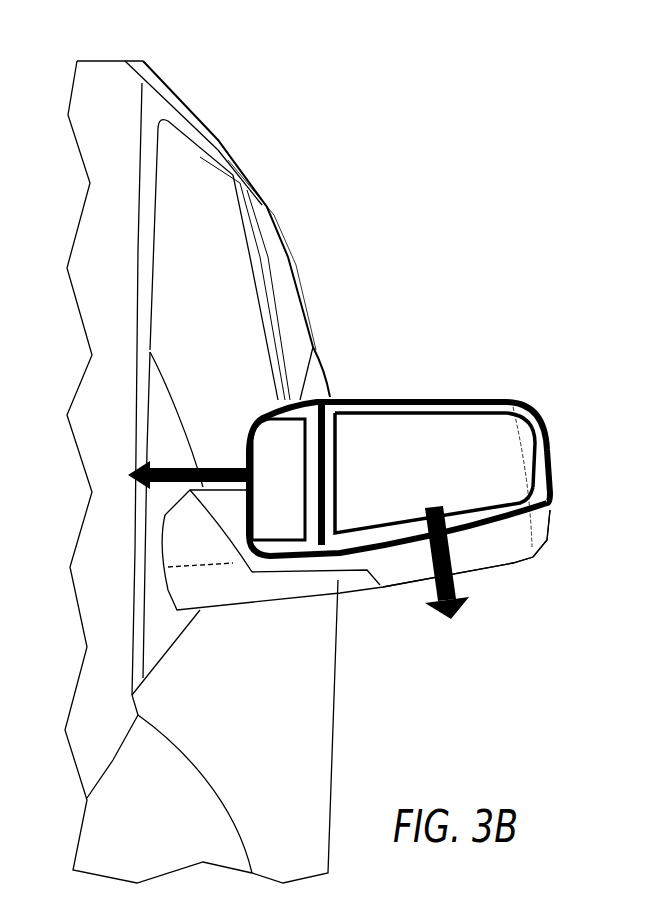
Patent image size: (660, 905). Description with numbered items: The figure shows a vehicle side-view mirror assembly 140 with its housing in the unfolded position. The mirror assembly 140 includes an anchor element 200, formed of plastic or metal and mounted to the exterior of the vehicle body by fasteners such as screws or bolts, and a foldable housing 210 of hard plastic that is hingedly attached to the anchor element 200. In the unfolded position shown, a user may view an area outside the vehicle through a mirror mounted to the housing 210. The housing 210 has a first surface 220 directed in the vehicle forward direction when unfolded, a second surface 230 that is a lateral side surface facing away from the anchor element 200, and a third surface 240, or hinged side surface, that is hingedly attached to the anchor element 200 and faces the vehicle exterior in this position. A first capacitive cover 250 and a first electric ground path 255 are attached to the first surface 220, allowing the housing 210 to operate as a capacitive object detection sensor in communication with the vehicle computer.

The side-view mirror assembly 140 is at (466, 313).
The anchor element 200 is at (242, 608).
The foldable housing 210 is at (518, 562).
The first surface 220 is at (432, 478).
The second surface 230 is at (552, 462).
The third surface 240 is at (280, 520).
The first capacitive cover 250 is at (463, 433).
The first electric ground path 255 is at (362, 400).